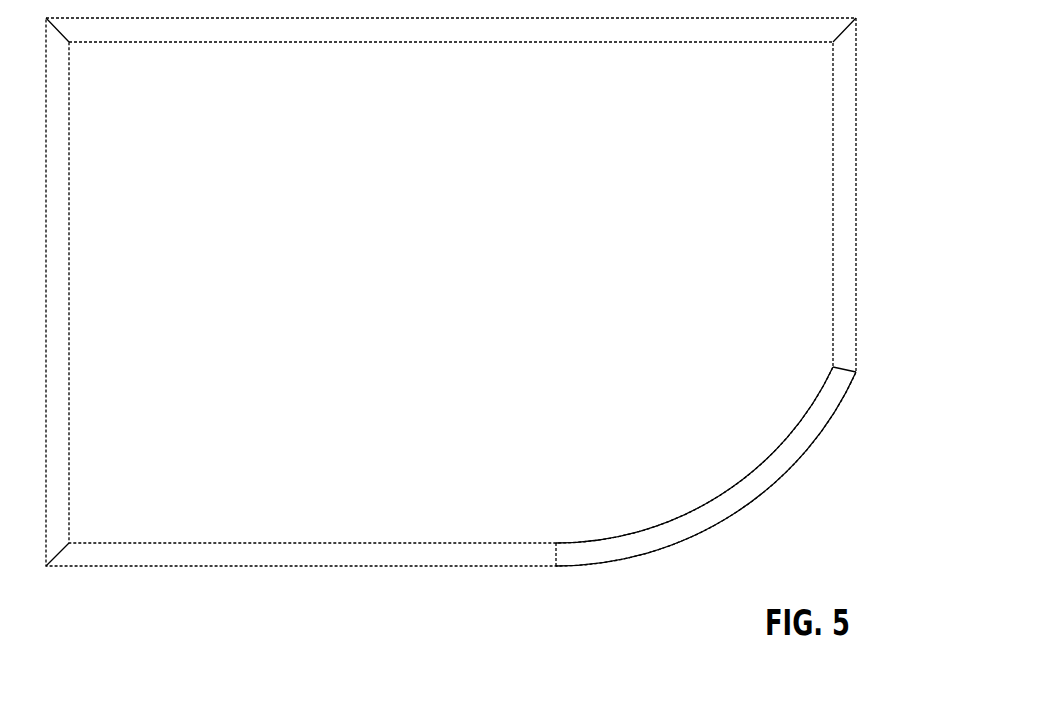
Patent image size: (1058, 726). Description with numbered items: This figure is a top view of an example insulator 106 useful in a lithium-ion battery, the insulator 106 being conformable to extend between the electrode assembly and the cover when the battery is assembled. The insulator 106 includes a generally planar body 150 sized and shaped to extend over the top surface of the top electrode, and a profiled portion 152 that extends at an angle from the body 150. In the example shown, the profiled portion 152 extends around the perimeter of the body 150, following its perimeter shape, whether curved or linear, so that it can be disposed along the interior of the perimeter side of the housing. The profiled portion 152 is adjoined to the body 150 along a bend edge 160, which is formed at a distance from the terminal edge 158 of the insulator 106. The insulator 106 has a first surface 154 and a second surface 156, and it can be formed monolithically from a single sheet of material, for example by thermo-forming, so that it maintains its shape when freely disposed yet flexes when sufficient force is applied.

The insulator 106 is at (148, 605).
The body 150 is at (398, 279).
The profiled portion 152 is at (489, 335).
The first surface 154 is at (570, 478).
The second surface 156 is at (710, 445).
The terminal edge 158 is at (857, 252).
The bend edge 160 is at (823, 387).